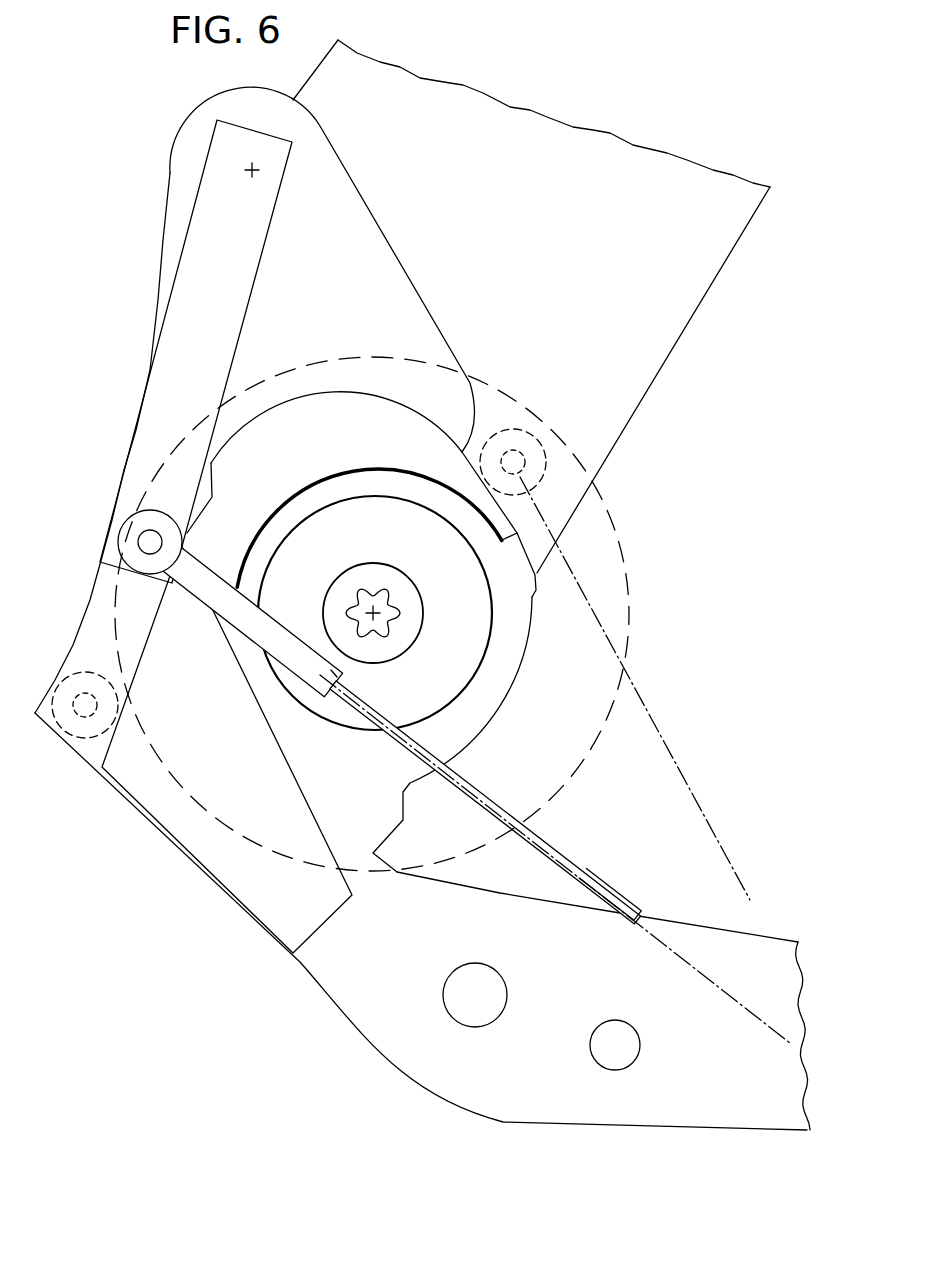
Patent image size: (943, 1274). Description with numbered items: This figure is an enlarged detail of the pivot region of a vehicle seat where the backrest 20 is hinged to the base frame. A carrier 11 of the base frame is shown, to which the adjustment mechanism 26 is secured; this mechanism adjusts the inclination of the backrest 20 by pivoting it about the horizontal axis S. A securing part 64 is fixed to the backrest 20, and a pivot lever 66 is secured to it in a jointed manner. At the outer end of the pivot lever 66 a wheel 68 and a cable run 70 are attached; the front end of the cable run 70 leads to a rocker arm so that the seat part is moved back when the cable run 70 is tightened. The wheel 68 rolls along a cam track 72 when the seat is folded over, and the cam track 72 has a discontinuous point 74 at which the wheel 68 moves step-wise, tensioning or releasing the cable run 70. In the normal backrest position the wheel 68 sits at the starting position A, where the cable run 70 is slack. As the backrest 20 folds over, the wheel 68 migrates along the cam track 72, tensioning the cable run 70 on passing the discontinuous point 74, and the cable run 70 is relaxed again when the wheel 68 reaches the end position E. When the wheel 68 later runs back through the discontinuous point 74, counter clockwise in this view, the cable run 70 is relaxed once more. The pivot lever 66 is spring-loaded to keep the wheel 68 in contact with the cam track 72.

The carrier 11 is at (390, 1032).
The backrest 20 is at (677, 299).
The adjustment mechanism 26 is at (618, 577).
The securing part 64 is at (392, 262).
The pivot lever 66 is at (182, 312).
The wheel 68 is at (127, 520).
The cable run 70 is at (693, 795).
The cam track 72 is at (258, 420).
The discontinuous point 74 is at (213, 480).
The horizontal axis S is at (380, 606).
The end position E is at (545, 470).
The starting position A is at (72, 746).